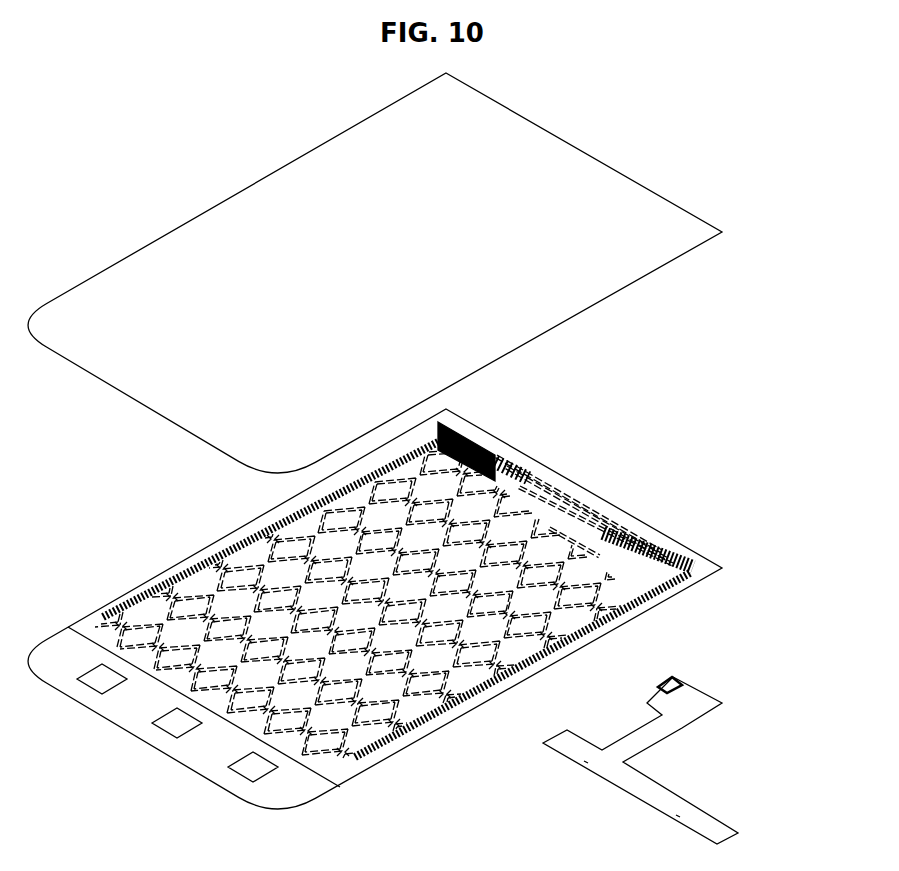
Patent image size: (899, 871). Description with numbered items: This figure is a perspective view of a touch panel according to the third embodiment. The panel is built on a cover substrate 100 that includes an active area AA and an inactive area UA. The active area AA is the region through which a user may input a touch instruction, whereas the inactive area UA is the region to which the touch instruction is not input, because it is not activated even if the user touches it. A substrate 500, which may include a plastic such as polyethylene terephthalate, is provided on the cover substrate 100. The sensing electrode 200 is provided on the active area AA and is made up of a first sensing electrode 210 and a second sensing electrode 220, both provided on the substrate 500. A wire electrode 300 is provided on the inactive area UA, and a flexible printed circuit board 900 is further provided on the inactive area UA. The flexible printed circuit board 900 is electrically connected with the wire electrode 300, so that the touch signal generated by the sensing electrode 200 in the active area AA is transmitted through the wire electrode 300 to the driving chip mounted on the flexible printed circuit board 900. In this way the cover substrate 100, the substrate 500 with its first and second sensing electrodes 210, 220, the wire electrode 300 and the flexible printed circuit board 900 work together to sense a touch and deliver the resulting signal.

The cover substrate 100 is at (243, 189).
The sensing electrode 200 is at (600, 606).
The first sensing electrode 210 is at (588, 598).
The second sensing electrode 220 is at (598, 560).
The wire electrode 300 is at (470, 448).
The substrate 500 is at (112, 600).
The flexible printed circuit board 900 is at (648, 741).
The active area AA is at (518, 651).
The inactive area UA is at (142, 704).